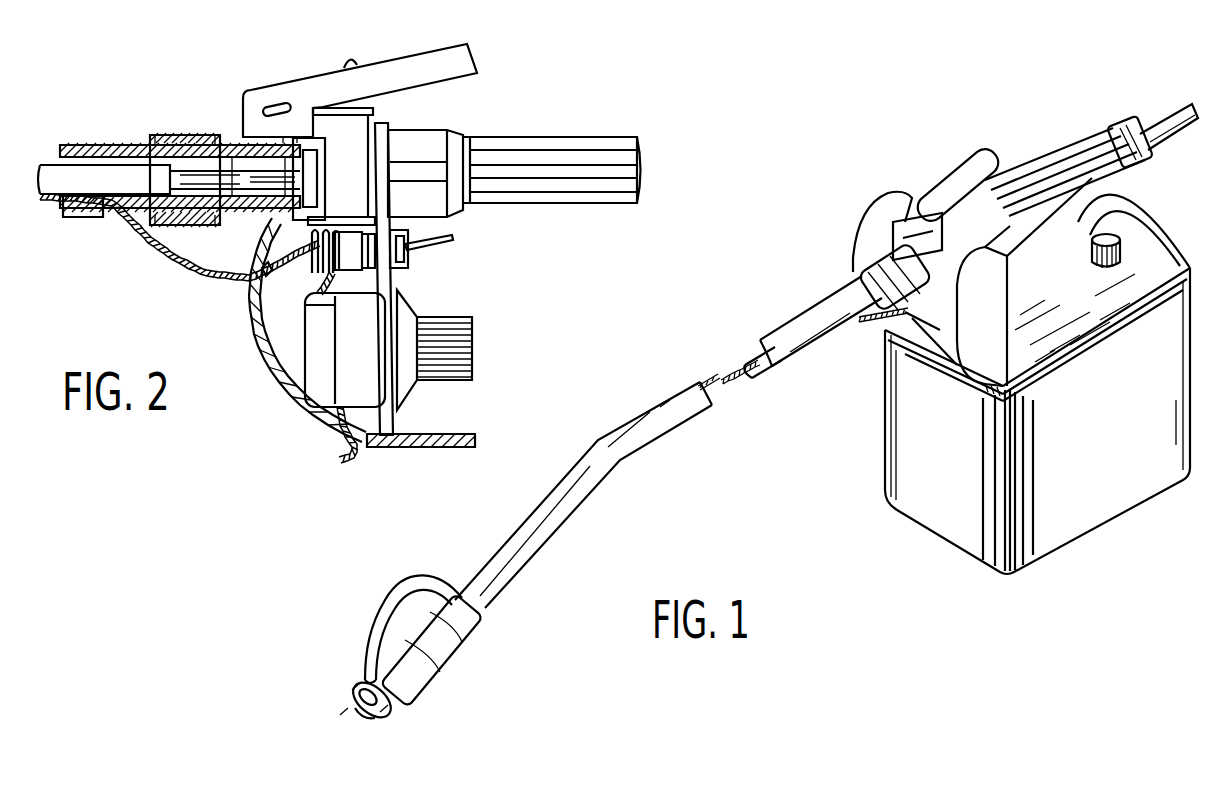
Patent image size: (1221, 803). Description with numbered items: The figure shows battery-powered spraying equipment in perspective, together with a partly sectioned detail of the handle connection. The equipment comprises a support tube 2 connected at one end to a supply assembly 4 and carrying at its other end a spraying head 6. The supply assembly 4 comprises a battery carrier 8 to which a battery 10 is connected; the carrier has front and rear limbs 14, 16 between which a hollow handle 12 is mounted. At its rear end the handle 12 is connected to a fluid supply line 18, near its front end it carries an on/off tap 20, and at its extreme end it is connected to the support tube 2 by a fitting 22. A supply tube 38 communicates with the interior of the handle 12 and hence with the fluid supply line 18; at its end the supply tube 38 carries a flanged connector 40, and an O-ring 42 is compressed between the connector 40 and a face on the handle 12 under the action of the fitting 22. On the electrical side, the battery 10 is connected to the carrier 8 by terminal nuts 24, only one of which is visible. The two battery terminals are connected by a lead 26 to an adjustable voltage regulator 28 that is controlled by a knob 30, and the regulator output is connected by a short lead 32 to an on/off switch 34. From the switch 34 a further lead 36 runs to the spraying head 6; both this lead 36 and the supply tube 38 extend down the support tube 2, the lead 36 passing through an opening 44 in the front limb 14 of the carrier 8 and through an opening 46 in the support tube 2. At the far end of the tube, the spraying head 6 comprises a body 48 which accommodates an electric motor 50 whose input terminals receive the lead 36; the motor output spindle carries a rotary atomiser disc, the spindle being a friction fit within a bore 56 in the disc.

In FIG. 1, the support tube 2 is at (633, 423).
In FIG. 1, the supply assembly 4 is at (883, 196).
In FIG. 1, the spraying head 6 is at (378, 604).
In FIG. 1, the battery carrier 8 is at (1045, 342).
In FIG. 1, the battery 10 is at (900, 460).
In FIG. 2, the hollow handle 12 is at (543, 153).
In FIG. 1, the hollow handle 12 is at (1070, 150).
In FIG. 2, the front limb 14 is at (256, 331).
In FIG. 1, the front limb 14 is at (943, 340).
In FIG. 1, the rear limb 16 is at (1127, 205).
In FIG. 1, the fluid supply line 18 is at (1158, 118).
In FIG. 2, the on/off tap 20 is at (330, 82).
In FIG. 1, the on/off tap 20 is at (925, 205).
In FIG. 2, the fitting 22 is at (187, 135).
In FIG. 1, the fitting 22 is at (860, 272).
In FIG. 1, the terminal nuts 24 is at (1100, 266).
In FIG. 2, the lead 26 is at (360, 452).
In FIG. 2, the adjustable voltage regulator 28 is at (312, 358).
In FIG. 2, the knob 30 is at (472, 352).
In FIG. 2, the short lead 32 is at (325, 282).
In FIG. 2, the on/off switch 34 is at (418, 258).
In FIG. 2, the lead 36 is at (165, 262).
In FIG. 1, the lead 36 is at (745, 357).
In FIG. 2, the supply tube 38 is at (52, 172).
In FIG. 1, the supply tube 38 is at (748, 379).
In FIG. 2, the flanged connector 40 is at (268, 222).
In FIG. 2, the O-ring 42 is at (320, 152).
In FIG. 2, the opening 44 is at (250, 300).
In FIG. 2, the opening 46 is at (90, 217).
In FIG. 1, the body 48 is at (445, 667).
In FIG. 1, the electric motor 50 is at (352, 697).
In FIG. 1, the bore 56 is at (355, 707).